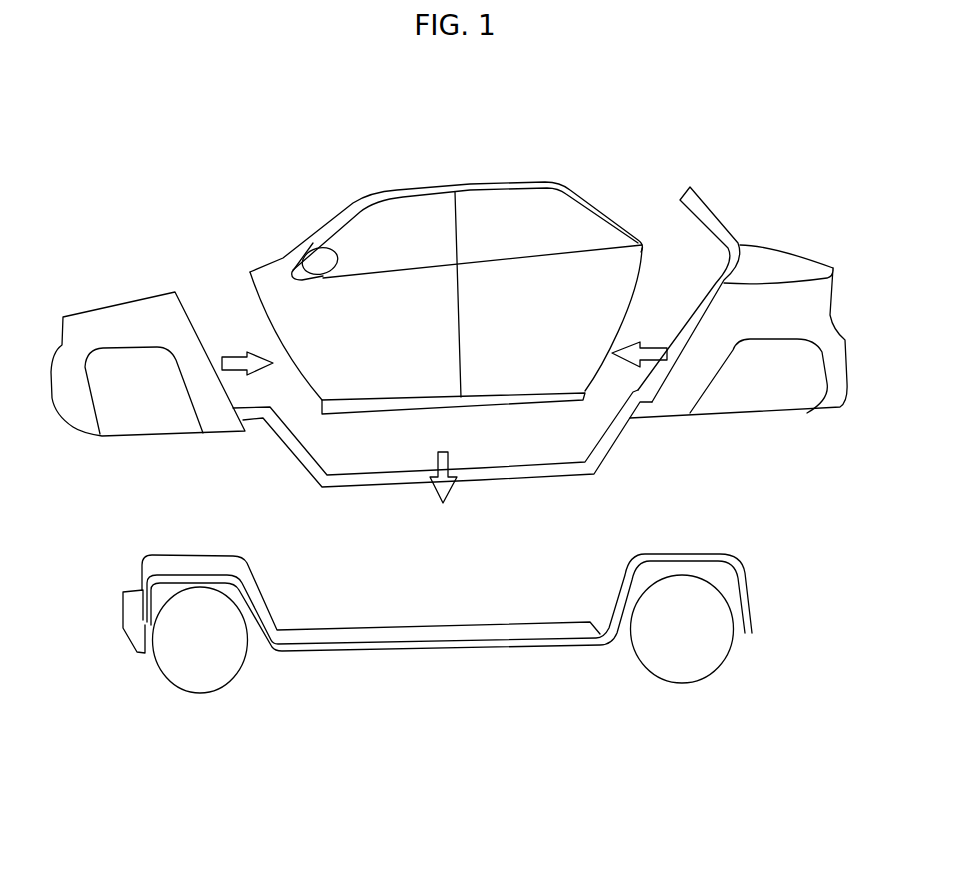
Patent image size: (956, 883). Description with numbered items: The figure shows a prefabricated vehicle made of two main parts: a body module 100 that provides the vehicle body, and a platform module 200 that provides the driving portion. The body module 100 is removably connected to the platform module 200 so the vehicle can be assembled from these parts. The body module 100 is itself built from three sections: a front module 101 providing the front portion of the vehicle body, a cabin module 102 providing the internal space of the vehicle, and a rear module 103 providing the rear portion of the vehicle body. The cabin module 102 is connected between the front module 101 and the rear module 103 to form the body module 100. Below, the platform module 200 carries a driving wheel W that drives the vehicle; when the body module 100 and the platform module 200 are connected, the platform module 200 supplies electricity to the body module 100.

The body module 100 is at (316, 180).
The front module 101 is at (152, 307).
The cabin module 102 is at (403, 227).
The rear module 103 is at (778, 268).
The platform module 200 is at (450, 647).
The driving wheel W is at (692, 657).